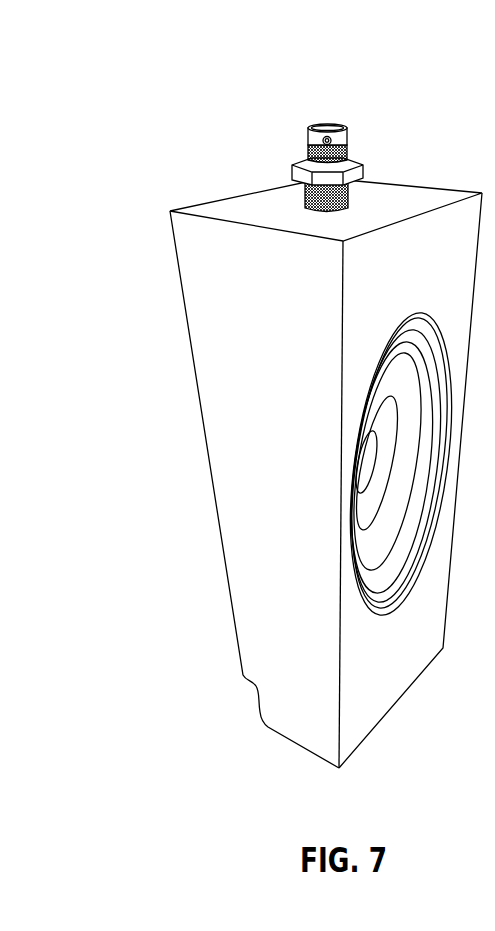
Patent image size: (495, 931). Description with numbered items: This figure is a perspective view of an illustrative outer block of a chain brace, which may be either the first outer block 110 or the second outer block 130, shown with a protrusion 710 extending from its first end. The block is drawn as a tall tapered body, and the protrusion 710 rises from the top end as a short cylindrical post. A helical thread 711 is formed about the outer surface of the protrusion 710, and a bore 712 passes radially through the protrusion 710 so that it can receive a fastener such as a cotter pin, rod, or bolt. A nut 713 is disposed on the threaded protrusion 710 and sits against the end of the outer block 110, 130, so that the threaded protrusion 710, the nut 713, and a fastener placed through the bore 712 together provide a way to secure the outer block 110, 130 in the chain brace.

The first outer block 110 is at (255, 473).
The second outer block 130 is at (174, 406).
The protrusion 710 is at (318, 109).
The helical thread 711 is at (277, 126).
The bore 712 is at (318, 127).
The nut 713 is at (300, 173).